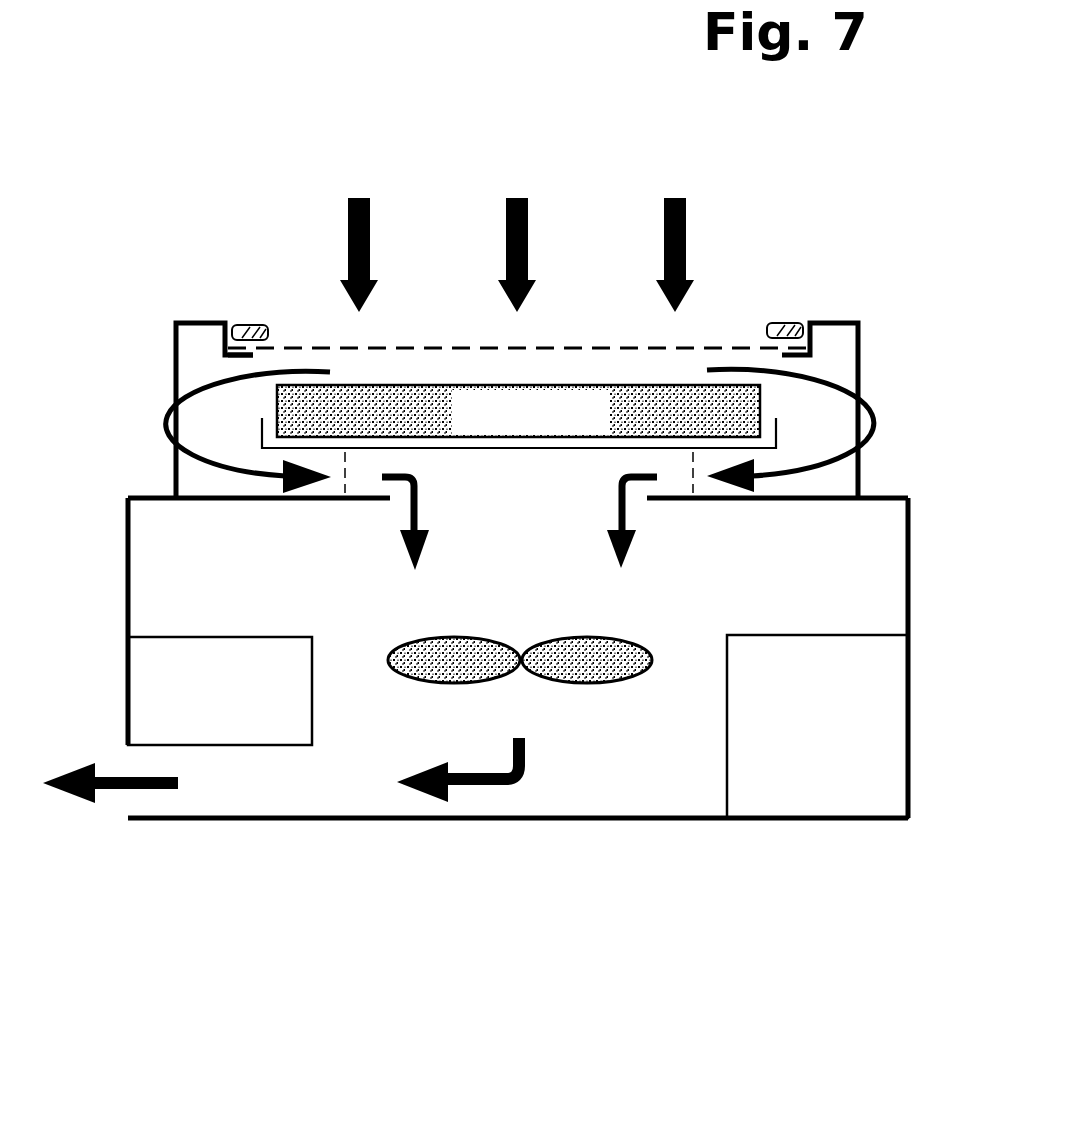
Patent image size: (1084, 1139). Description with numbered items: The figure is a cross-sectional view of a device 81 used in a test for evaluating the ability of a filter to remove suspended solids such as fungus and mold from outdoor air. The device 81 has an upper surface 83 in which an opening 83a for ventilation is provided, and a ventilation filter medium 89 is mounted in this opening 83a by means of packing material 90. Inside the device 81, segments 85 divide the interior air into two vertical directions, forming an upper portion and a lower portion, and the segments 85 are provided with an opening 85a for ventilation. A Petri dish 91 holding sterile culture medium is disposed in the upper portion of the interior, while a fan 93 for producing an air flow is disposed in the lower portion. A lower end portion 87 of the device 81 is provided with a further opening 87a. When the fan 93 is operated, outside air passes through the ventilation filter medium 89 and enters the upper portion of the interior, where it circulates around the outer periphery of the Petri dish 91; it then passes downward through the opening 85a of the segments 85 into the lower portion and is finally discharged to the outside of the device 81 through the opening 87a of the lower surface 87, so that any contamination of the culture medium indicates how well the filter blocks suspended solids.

The device 81 is at (163, 140).
The upper surface 83 is at (835, 322).
The opening 83a is at (284, 352).
The segments 85 is at (217, 498).
The opening 85a is at (392, 498).
The lower end portion 87 is at (682, 818).
The opening 87a is at (158, 813).
The ventilation filter medium 89 is at (593, 346).
The packing material 90 is at (250, 322).
The Petri dish 91 is at (777, 432).
The fan 93 is at (630, 712).